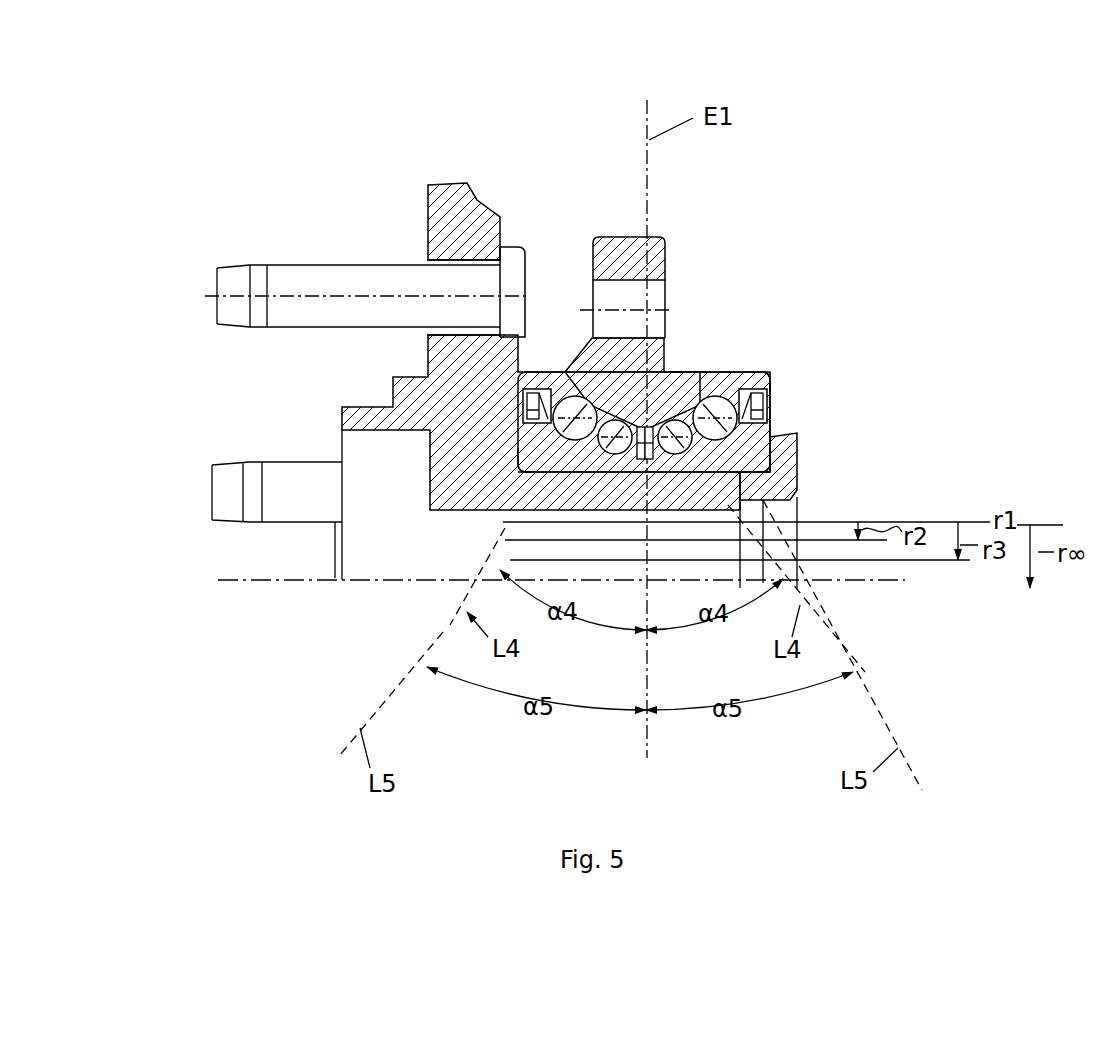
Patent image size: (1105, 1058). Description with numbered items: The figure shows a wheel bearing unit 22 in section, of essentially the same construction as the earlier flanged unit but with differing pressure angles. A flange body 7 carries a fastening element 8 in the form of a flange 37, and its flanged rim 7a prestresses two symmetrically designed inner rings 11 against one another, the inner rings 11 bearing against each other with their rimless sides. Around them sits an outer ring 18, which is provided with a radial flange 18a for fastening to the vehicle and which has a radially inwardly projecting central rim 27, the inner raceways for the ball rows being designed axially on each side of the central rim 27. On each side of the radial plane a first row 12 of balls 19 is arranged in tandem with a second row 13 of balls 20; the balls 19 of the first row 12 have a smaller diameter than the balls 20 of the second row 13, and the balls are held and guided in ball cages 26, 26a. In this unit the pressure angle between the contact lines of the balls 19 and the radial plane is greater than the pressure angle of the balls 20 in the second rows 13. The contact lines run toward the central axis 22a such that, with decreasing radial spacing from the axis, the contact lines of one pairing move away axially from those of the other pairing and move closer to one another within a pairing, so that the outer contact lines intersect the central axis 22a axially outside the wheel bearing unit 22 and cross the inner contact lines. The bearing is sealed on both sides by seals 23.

The flange body 7 is at (617, 422).
The flanged rim 7a is at (783, 455).
The fastening element 8 is at (499, 302).
The flange 37 is at (440, 232).
The inner ring 11 is at (490, 505).
The first row 12 is at (662, 313).
The second row 13 is at (668, 319).
The outer ring 18 is at (679, 302).
The radial flange 18a is at (665, 237).
The balls 19 is at (610, 418).
The balls 20 is at (563, 392).
The wheel bearing unit 22 is at (877, 258).
The central axis 22a is at (231, 584).
The seal 23 is at (525, 395).
The ball cage 26 is at (657, 476).
The ball cage 26a is at (517, 430).
The central rim 27 is at (641, 476).